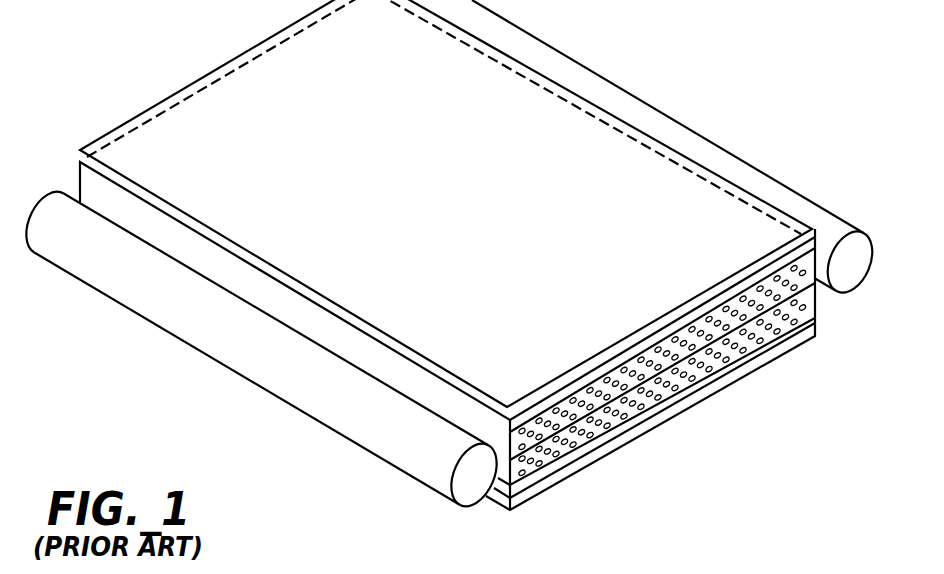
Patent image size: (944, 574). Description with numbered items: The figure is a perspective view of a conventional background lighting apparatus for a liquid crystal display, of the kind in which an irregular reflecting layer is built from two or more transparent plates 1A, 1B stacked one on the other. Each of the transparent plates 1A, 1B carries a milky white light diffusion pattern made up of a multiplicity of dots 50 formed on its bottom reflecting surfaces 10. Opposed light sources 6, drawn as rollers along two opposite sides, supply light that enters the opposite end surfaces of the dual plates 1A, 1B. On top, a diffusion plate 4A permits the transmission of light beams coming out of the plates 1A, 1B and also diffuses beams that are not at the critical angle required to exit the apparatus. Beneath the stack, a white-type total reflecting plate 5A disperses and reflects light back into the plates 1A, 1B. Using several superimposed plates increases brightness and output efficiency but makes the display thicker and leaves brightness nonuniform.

The light sources 6 is at (108, 282).
The diffusion plate 4A is at (648, 170).
The transparent plate 1A is at (806, 258).
The transparent plate 1B is at (817, 318).
The total reflecting plate 5A is at (787, 351).
The bottom reflecting surfaces 10 is at (484, 336).
The dots 50 is at (703, 310).